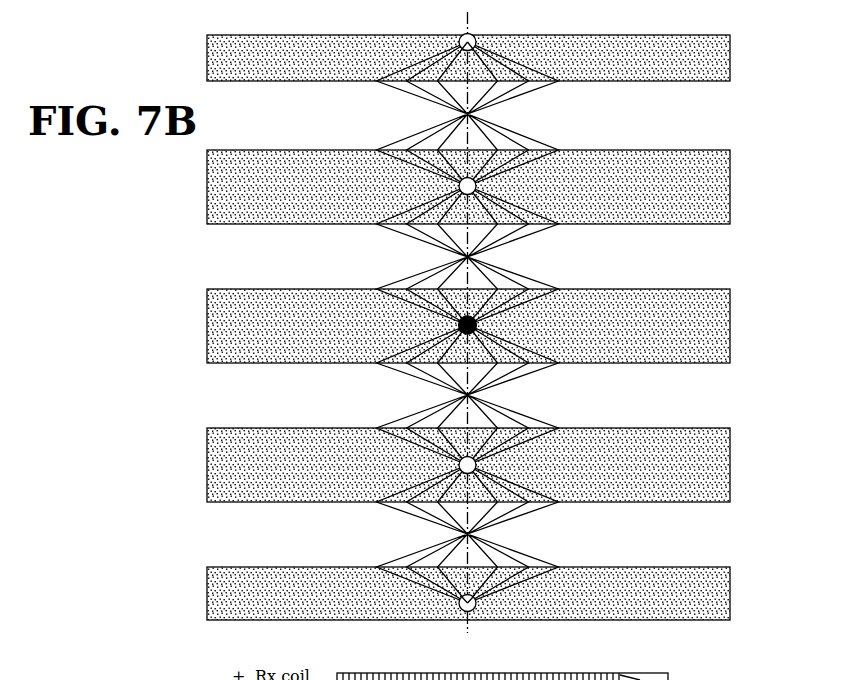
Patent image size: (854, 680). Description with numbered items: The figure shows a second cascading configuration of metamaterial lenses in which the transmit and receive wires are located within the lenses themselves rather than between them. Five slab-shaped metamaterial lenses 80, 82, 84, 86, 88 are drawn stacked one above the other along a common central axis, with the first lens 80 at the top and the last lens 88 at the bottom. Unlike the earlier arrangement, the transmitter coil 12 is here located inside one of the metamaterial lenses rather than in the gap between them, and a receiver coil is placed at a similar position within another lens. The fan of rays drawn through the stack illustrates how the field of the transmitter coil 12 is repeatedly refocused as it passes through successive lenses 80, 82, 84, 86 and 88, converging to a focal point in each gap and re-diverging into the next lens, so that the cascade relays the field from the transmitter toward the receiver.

The metamaterial lens 80 is at (629, 66).
The metamaterial lens 82 is at (706, 246).
The metamaterial lens 84 is at (706, 390).
The metamaterial lens 86 is at (706, 540).
The metamaterial lens 88 is at (627, 603).
The transmitter coil 12 is at (477, 467).